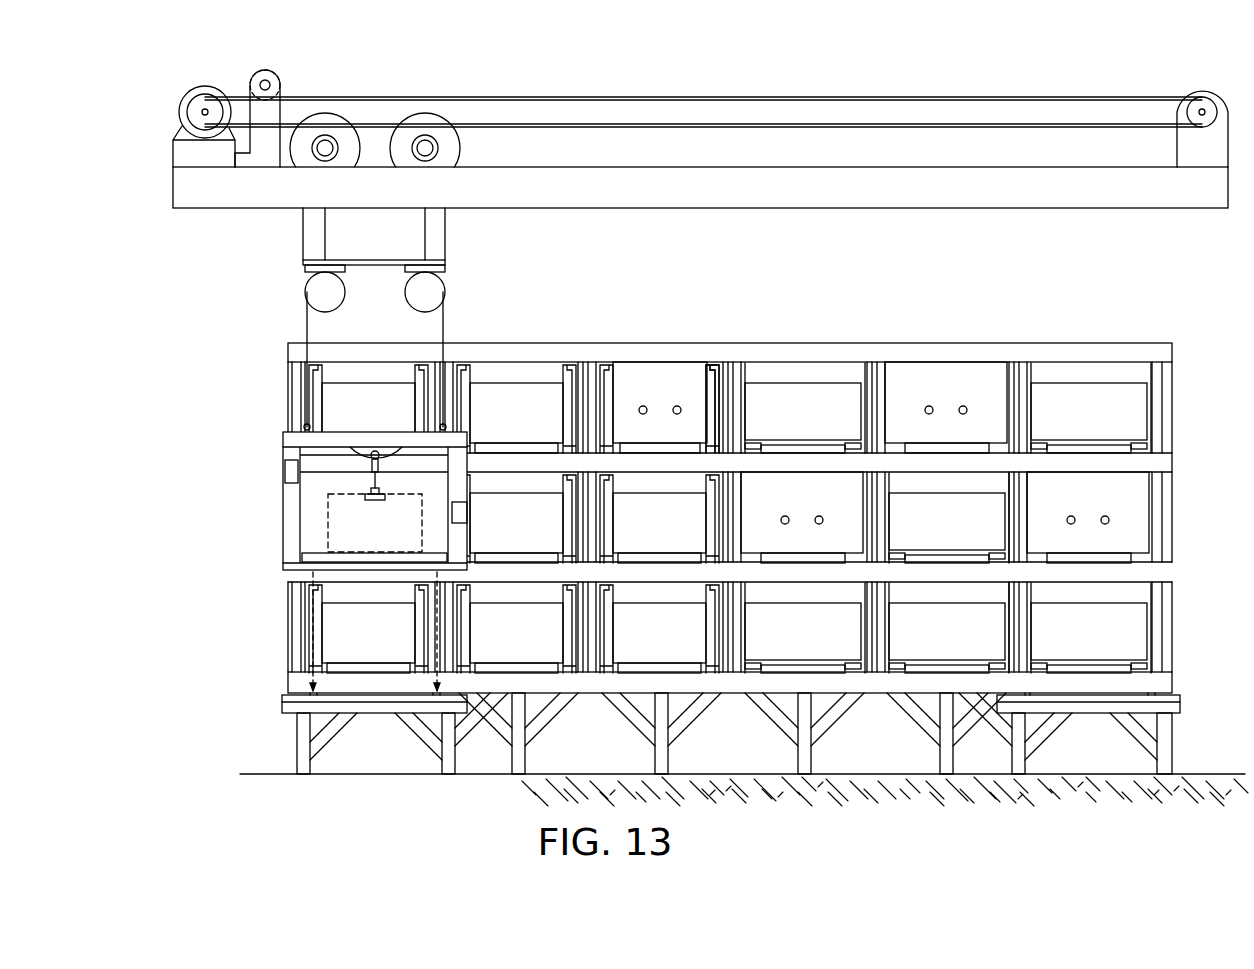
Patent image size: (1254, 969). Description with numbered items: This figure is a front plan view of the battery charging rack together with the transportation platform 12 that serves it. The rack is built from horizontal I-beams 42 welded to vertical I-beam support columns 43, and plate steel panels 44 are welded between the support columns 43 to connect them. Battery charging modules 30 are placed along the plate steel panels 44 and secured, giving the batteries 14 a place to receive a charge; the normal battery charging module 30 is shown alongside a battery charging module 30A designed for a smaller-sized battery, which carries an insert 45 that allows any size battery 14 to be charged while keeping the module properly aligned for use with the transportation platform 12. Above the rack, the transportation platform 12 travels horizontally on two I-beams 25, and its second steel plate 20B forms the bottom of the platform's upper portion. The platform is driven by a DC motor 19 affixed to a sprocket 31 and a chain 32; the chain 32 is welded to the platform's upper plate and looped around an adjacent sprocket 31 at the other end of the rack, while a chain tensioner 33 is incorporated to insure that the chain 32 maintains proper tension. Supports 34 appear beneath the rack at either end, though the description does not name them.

The transportation platform 12 is at (236, 392).
The battery 14 is at (515, 395).
The DC motor 19 is at (185, 128).
The second steel plate 20B is at (303, 268).
The I-beam 25 is at (638, 210).
The battery charging module 30 is at (945, 385).
The battery charging module 30A is at (660, 385).
The sprocket 31 is at (213, 95).
The chain 32 is at (486, 95).
The chain tensioner 33 is at (274, 70).
The support pedestal 34 is at (285, 707).
The horizontal I-beam 42 is at (1100, 355).
The vertical I-beam support column 43 is at (1170, 492).
The plate steel panel 44 is at (1140, 556).
The insert 45 is at (714, 368).